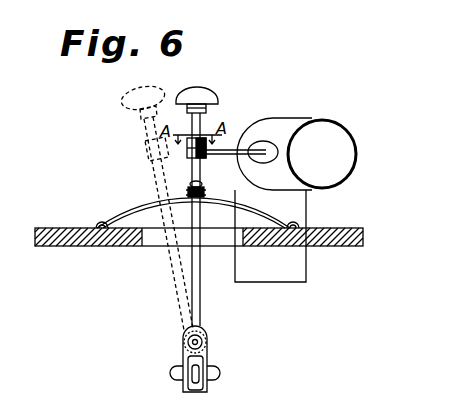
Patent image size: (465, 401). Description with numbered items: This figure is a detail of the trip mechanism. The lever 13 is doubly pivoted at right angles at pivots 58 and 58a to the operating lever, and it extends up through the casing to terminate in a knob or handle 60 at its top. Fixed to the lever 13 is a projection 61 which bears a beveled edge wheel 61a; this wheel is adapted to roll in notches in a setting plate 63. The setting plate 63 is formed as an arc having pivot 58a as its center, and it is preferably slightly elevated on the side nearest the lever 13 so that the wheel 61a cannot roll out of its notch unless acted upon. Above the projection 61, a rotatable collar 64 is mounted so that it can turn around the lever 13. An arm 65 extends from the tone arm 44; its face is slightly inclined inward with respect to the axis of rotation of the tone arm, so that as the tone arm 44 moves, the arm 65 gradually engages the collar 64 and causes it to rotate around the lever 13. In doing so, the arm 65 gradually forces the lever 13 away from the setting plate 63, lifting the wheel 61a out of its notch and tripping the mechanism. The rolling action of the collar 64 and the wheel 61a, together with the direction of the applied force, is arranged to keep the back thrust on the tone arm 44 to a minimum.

The lever 13 is at (200, 269).
The tone arm 44 is at (358, 155).
The pivot 58 is at (214, 374).
The pivot 58a is at (208, 336).
The knob or handle 60 is at (207, 94).
The projection 61 is at (204, 192).
The beveled edge wheel 61a is at (201, 185).
The setting plate 63 is at (138, 209).
The rotatable collar 64 is at (206, 139).
The arm 65 is at (244, 126).